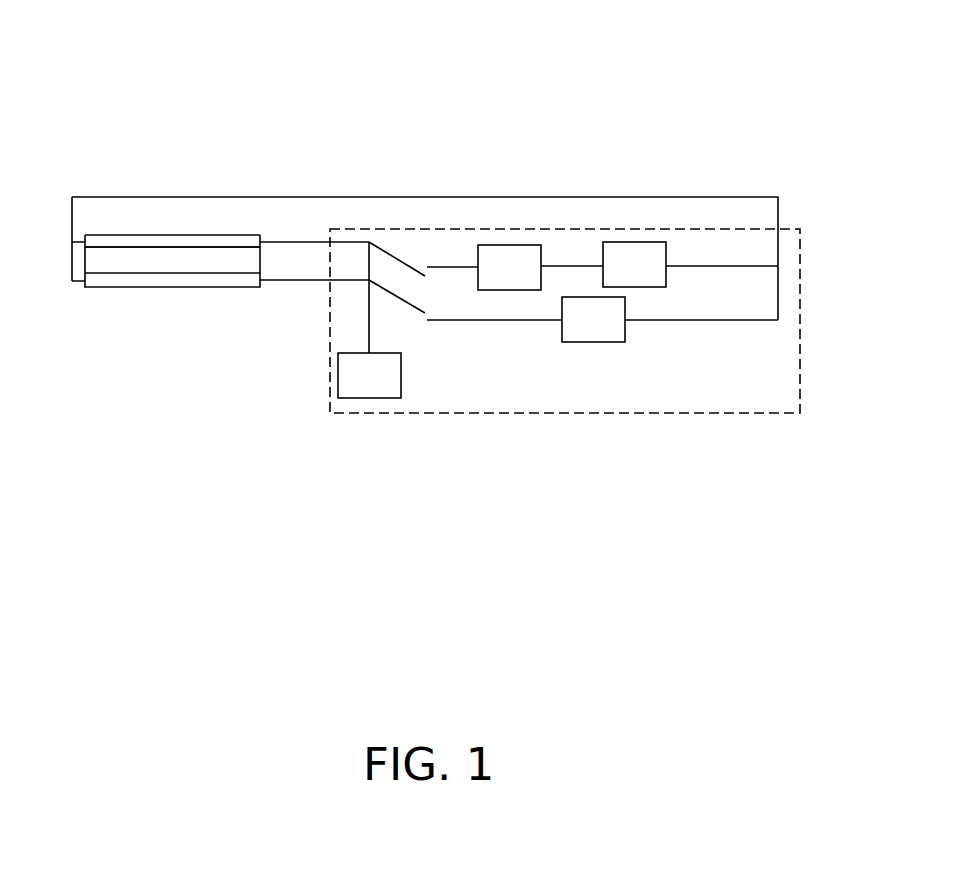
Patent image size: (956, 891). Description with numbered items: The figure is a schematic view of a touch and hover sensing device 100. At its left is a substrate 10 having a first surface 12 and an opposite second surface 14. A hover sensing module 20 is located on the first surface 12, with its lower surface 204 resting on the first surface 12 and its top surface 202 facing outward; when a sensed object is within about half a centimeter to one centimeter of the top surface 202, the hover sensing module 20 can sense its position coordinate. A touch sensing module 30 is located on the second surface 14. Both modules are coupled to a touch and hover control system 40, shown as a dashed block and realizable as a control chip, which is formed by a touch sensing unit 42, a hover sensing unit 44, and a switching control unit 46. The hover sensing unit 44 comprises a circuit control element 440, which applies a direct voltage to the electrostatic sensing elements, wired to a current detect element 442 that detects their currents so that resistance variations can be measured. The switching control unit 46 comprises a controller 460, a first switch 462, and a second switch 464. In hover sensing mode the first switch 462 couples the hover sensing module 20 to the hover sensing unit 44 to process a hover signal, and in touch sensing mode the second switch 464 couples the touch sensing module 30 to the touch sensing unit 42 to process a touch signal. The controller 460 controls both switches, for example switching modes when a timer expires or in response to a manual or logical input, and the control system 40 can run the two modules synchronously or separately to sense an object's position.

The touch and hover sensing device 100 is at (446, 46).
The substrate 10 is at (150, 267).
The first surface 12 is at (195, 247).
The second surface 14 is at (187, 275).
The hover sensing module 20 is at (155, 240).
The top surface 202 is at (180, 235).
The lower surface 204 is at (243, 248).
The touch sensing module 30 is at (108, 282).
The touch and hover control system 40 is at (626, 413).
The touch sensing unit 42 is at (597, 333).
The hover sensing unit 44 is at (632, 143).
The circuit control element 440 is at (523, 245).
The current detect element 442 is at (627, 243).
The switching control unit 46 is at (472, 483).
The controller 460 is at (378, 385).
The first switch 462 is at (398, 260).
The second switch 464 is at (413, 310).